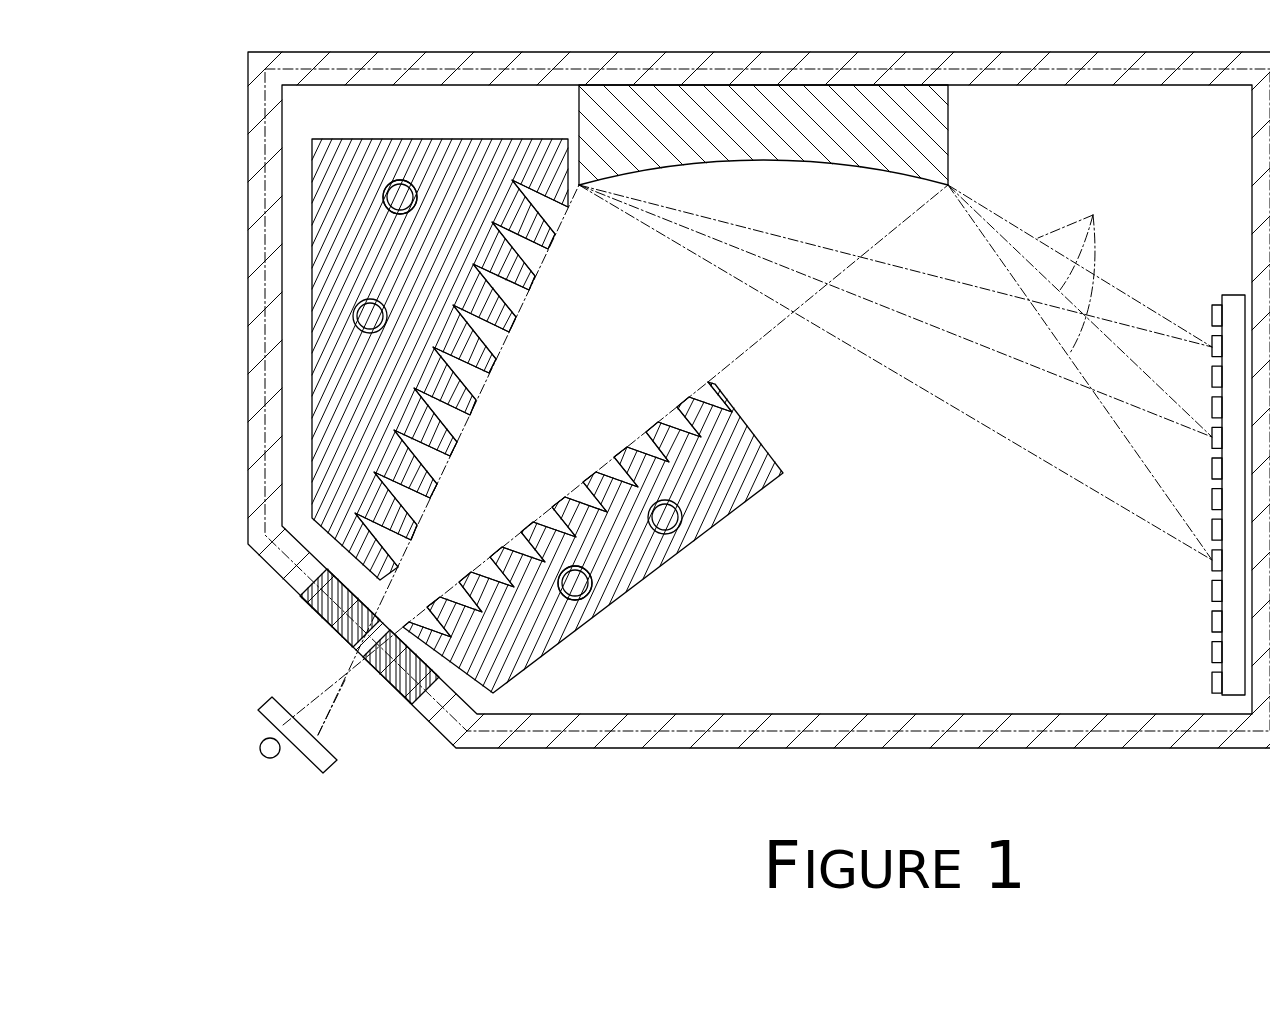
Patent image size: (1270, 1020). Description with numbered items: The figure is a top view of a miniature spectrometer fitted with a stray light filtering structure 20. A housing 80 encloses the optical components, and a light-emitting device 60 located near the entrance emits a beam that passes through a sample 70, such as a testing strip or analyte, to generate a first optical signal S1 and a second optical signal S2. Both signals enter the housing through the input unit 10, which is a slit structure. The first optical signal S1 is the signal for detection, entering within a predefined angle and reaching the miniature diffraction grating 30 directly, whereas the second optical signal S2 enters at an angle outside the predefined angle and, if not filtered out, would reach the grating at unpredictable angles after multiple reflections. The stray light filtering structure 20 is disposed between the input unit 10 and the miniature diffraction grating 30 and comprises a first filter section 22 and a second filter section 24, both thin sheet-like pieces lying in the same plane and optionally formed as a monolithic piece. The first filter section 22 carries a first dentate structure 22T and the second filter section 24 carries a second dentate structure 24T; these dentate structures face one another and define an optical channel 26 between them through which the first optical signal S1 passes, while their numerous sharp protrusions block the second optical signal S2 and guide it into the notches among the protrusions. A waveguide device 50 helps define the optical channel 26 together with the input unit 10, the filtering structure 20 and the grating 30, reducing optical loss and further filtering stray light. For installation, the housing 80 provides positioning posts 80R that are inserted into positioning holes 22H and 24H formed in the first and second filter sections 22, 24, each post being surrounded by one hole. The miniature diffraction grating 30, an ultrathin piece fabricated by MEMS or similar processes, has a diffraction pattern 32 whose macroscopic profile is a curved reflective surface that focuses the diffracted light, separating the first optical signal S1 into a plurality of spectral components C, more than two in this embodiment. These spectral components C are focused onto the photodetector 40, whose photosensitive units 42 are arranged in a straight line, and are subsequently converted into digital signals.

The input unit 10 is at (405, 694).
The stray light filtering structure 20 is at (466, 389).
The first filter section 22 is at (303, 287).
The first dentate structure 22T is at (497, 315).
The positioning hole 22H is at (398, 187).
The second filter section 24 is at (652, 586).
The second dentate structure 24T is at (580, 487).
The positioning hole 24H is at (593, 588).
The optical channel 26 is at (618, 398).
The miniature diffraction grating 30 is at (910, 130).
The diffraction pattern 32 is at (760, 162).
The photodetector 40 is at (1235, 296).
The photosensitive units 42 is at (1213, 304).
The waveguide device 50 is at (268, 518).
The light-emitting device 60 is at (260, 748).
The sample 70 is at (270, 712).
The housing 80 is at (254, 387).
The positioning posts 80R is at (408, 189).
The spectral components C is at (1073, 271).
The first optical signal S1 is at (420, 517).
The second optical signal S2 is at (383, 585).